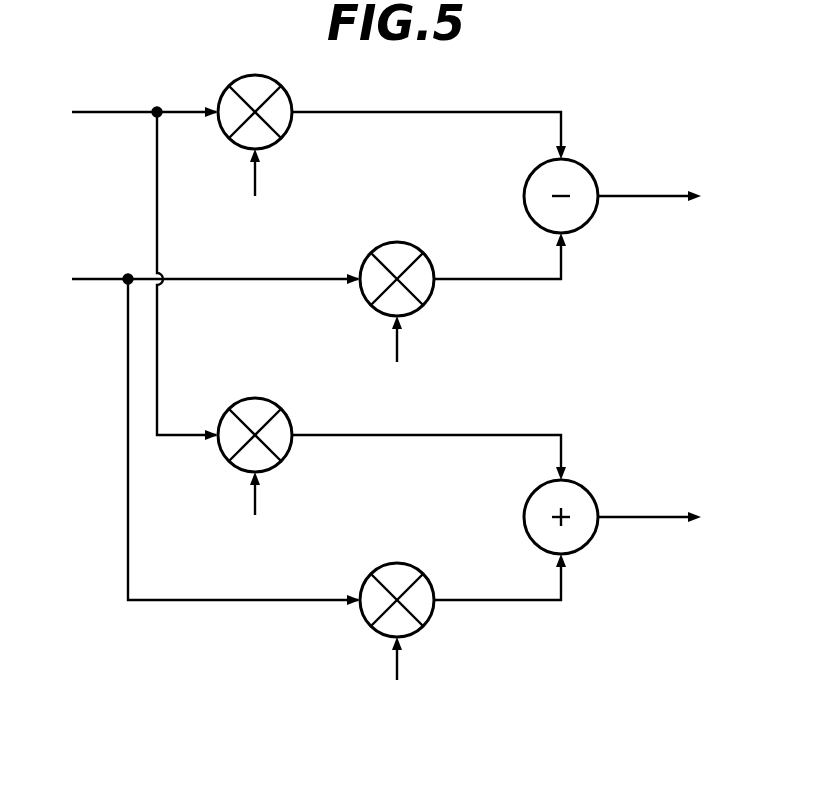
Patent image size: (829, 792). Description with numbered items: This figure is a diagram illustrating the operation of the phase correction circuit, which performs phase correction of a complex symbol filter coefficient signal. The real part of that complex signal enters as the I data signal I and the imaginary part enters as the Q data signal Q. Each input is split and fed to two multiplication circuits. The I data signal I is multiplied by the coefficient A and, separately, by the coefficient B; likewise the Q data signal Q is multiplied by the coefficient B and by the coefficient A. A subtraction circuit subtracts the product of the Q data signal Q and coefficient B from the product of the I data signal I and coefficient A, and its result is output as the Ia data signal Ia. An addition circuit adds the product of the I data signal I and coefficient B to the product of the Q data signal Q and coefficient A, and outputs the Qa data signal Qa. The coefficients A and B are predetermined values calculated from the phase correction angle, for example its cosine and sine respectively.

The I data signal I is at (135, 268).
The Q data signal Q is at (202, 434).
The coefficient A is at (325, 431).
The coefficient B is at (325, 431).
The Ia data signal Ia is at (667, 197).
The Qa data signal Qa is at (671, 518).